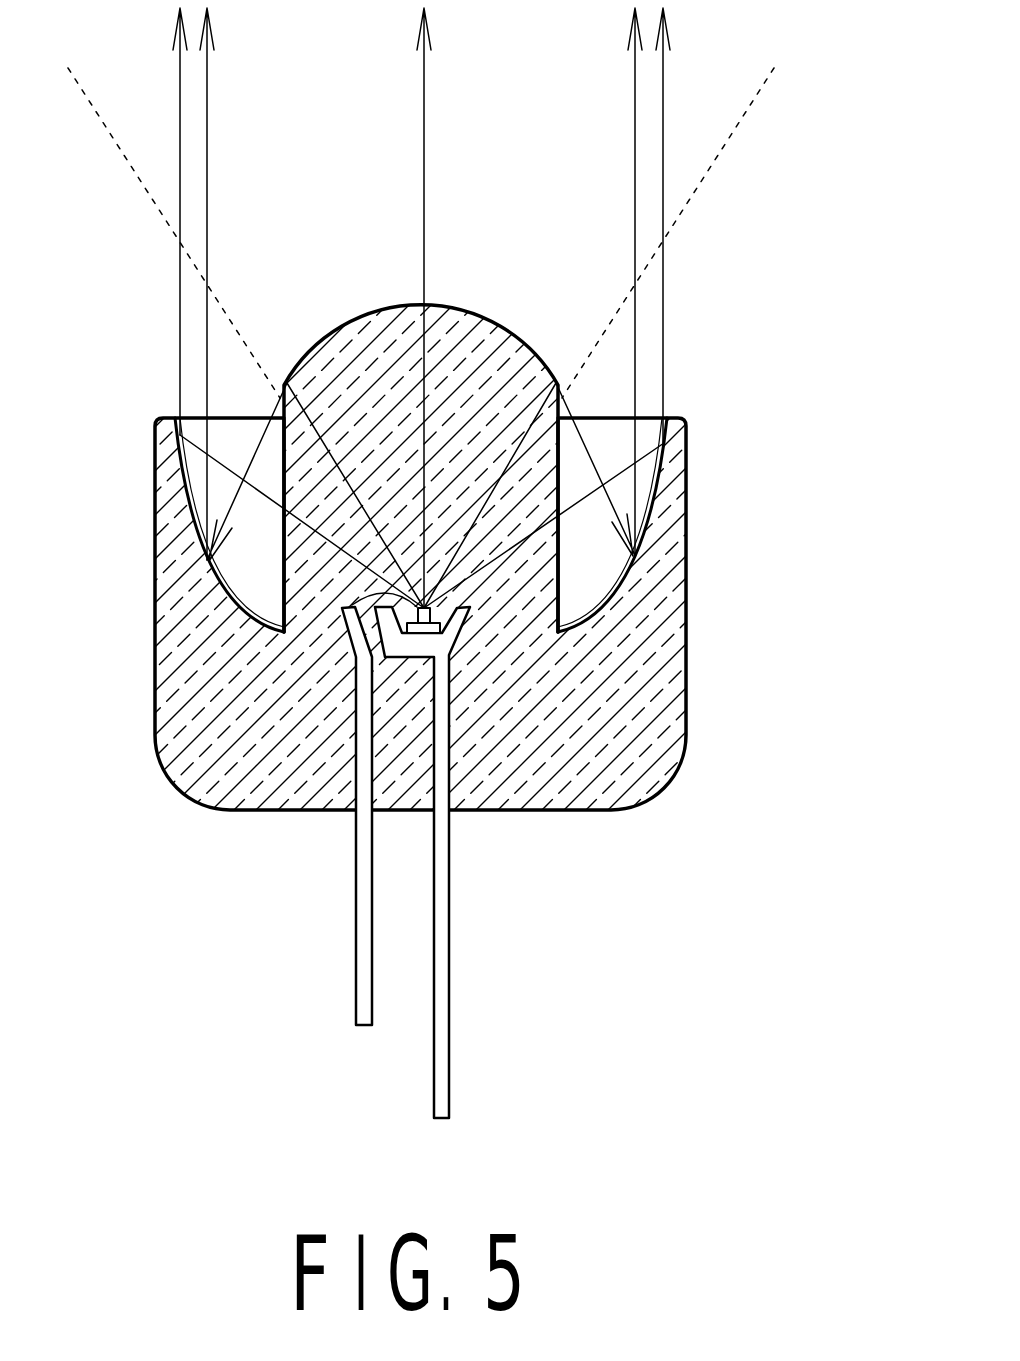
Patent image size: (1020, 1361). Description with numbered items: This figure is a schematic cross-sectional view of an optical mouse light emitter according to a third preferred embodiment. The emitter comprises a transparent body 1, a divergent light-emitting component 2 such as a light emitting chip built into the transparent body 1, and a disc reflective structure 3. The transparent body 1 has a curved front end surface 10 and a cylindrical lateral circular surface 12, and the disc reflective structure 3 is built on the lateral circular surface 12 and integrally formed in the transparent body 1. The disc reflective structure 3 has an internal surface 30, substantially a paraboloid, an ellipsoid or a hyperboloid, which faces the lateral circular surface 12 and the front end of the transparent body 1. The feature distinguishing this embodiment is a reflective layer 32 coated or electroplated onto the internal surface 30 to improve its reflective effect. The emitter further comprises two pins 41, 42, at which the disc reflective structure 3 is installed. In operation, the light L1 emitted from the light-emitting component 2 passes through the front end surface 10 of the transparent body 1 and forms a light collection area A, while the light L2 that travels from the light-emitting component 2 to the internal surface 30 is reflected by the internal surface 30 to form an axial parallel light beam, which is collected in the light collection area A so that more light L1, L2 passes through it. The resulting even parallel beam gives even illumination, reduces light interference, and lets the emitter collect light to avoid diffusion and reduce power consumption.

The transparent body 1 is at (513, 577).
The divergent light-emitting component 2 is at (440, 625).
The disc reflective structure 3 is at (643, 637).
The curved front end surface 10 is at (515, 333).
The cylindrical lateral circular surface 12 is at (650, 547).
The internal surface 30 is at (688, 462).
The reflective layer 32 is at (672, 435).
The pin 41 is at (450, 930).
The pin 42 is at (355, 922).
The light L1 is at (424, 118).
The light L2 is at (663, 342).
The light collection area A is at (690, 158).